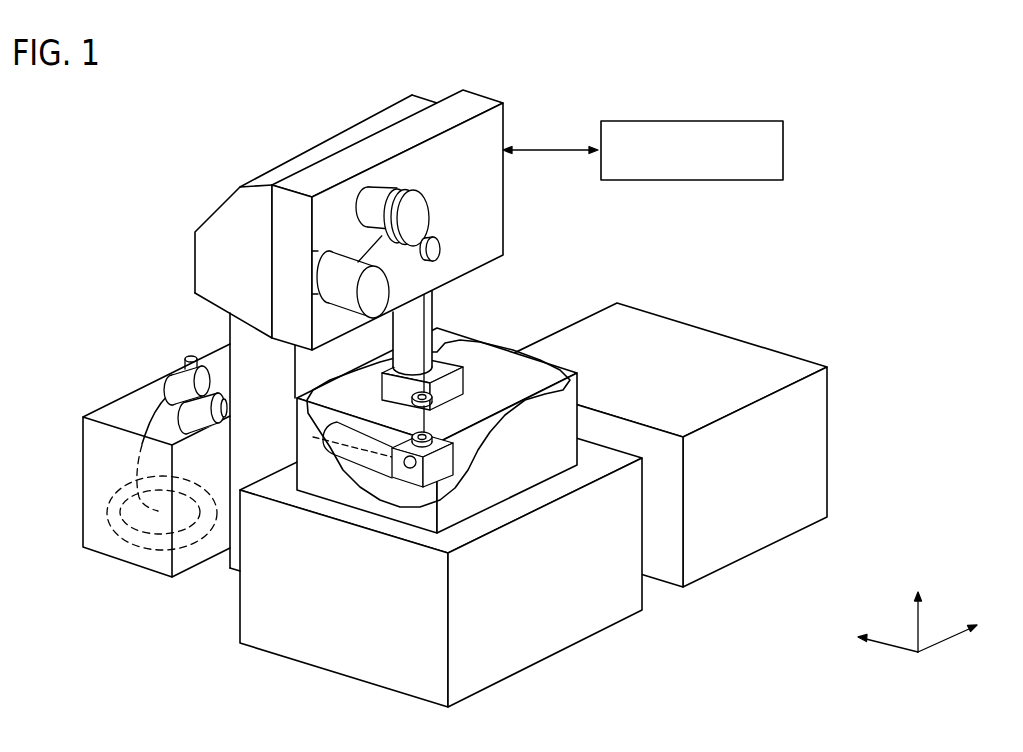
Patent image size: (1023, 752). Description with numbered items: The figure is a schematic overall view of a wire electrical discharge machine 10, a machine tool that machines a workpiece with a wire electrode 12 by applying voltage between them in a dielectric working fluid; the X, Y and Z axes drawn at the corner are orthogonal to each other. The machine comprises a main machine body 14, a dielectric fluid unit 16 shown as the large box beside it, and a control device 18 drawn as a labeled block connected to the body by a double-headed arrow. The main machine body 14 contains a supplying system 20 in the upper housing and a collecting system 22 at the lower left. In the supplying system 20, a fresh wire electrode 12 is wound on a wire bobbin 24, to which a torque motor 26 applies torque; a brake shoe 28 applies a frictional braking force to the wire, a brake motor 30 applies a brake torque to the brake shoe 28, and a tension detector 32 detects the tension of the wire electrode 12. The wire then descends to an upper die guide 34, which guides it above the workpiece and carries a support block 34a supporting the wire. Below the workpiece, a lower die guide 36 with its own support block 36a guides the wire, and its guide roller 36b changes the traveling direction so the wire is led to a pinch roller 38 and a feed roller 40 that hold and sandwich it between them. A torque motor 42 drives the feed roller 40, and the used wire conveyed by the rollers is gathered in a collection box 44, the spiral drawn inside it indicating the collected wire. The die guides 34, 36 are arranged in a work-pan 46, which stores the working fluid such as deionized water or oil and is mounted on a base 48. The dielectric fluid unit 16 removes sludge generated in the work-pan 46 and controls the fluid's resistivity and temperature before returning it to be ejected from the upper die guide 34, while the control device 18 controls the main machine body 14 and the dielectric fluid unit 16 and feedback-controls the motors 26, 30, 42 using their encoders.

The wire electrical discharge machine 10 is at (22, 151).
The wire electrode 12 is at (430, 276).
The main machine body 14 is at (329, 220).
The dielectric fluid unit 16 is at (814, 431).
The control device 18 is at (712, 120).
The supplying system 20 is at (452, 196).
The collecting system 22 is at (165, 398).
The wire bobbin 24 is at (344, 262).
The torque motor 26 is at (314, 276).
The brake shoe 28 is at (414, 207).
The brake motor 30 is at (372, 204).
The tension detector 32 is at (441, 249).
The upper die guide 34 is at (453, 359).
The support block 34a is at (434, 391).
The lower die guide 36 is at (418, 490).
The support block 36a is at (428, 436).
The guide roller 36b is at (408, 470).
The pinch roller 38 is at (191, 356).
The feed roller 40 is at (208, 428).
The torque motor 42 is at (207, 395).
The collection box 44 is at (95, 463).
The work-pan 46 is at (545, 362).
The base 48 is at (573, 627).